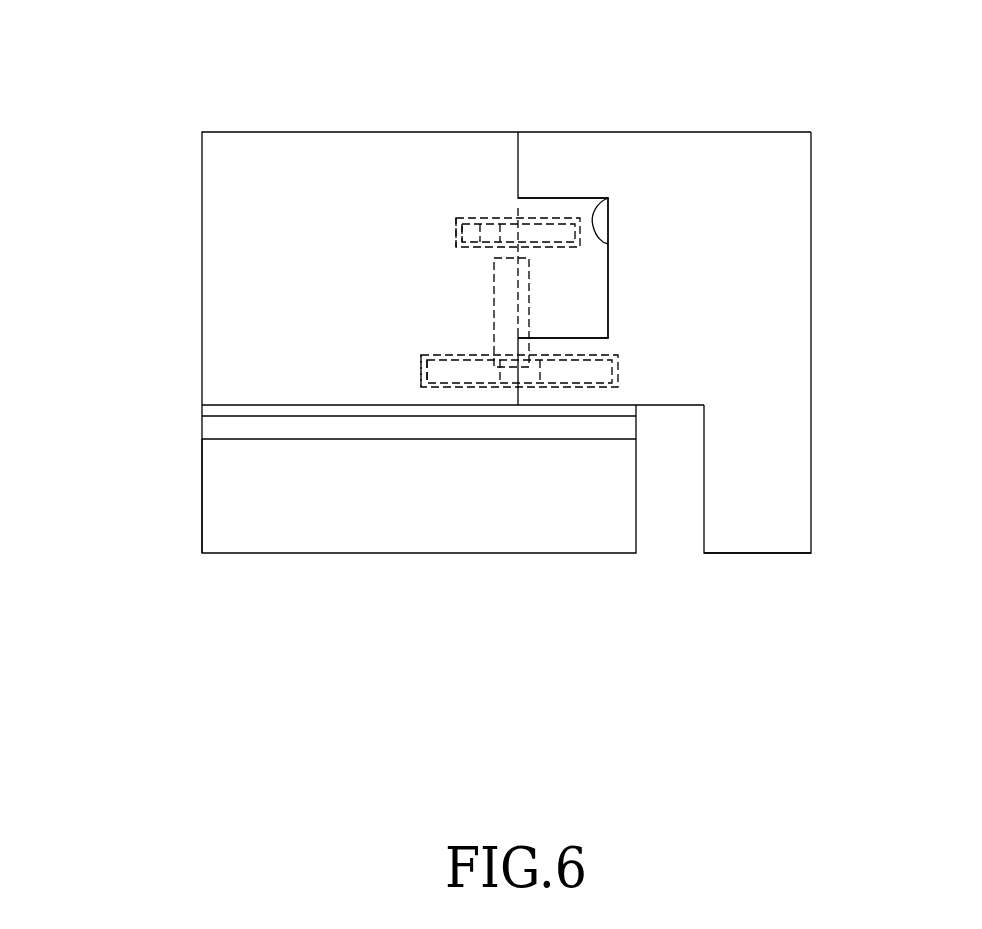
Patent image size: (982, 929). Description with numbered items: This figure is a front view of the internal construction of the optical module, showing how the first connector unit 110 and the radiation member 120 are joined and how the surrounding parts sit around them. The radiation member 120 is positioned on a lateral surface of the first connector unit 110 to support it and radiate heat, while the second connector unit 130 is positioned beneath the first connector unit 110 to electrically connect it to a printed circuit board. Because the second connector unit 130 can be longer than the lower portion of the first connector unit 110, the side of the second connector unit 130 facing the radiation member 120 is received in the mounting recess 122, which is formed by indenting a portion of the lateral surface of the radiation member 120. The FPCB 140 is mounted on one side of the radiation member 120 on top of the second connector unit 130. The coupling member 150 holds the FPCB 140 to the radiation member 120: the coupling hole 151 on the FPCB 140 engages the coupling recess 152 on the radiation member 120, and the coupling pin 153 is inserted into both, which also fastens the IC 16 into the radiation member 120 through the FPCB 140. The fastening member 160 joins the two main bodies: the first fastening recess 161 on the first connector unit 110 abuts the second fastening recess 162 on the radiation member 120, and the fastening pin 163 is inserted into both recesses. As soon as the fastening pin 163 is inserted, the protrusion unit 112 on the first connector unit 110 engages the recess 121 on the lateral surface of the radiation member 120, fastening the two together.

The IC 16 is at (505, 305).
The first connector unit 110 is at (220, 177).
The protrusion unit 112 is at (600, 198).
The radiation member 120 is at (780, 354).
The recess 121 is at (608, 267).
The mounting recess 122 is at (705, 477).
The second connector unit 130 is at (316, 503).
The FPCB 140 is at (270, 428).
The coupling member 150 is at (402, 47).
The coupling hole 151 is at (456, 237).
The coupling recess 152 is at (554, 227).
The coupling pin 153 is at (487, 232).
The fastening member 160 is at (598, 630).
The first fastening recess 161 is at (425, 387).
The second fastening recess 162 is at (623, 385).
The fastening pin 163 is at (537, 372).